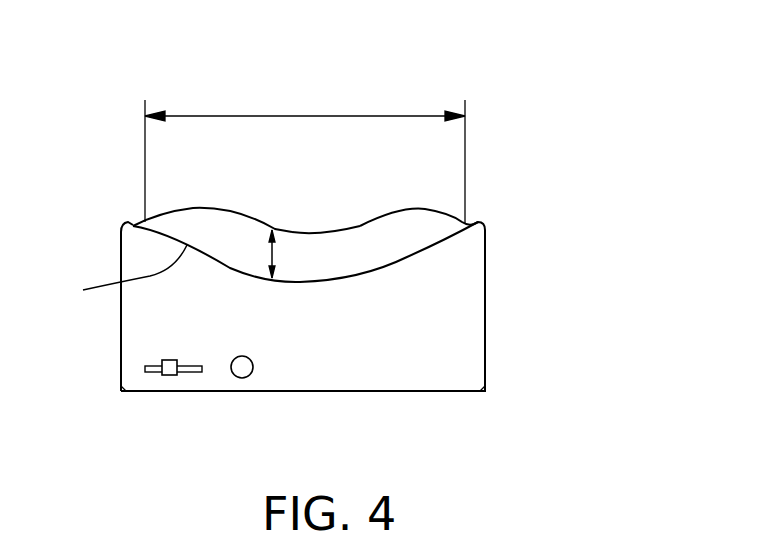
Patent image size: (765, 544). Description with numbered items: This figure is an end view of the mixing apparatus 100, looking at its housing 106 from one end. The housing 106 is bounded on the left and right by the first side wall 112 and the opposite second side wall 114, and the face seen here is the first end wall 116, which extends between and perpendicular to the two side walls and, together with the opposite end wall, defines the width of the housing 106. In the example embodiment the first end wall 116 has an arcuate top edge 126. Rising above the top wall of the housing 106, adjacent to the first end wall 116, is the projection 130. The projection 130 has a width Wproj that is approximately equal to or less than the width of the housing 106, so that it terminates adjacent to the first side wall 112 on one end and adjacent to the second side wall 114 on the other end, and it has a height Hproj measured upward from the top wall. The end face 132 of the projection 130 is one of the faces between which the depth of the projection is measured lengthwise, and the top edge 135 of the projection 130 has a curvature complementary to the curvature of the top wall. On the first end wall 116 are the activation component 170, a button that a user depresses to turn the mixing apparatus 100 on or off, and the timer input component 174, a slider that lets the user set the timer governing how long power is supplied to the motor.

The mixing apparatus 100 is at (325, 253).
The housing 106 is at (486, 272).
The first side wall 112 is at (487, 274).
The second side wall 114 is at (118, 264).
The first end wall 116 is at (337, 362).
The top edge 126 is at (404, 257).
The projection 130 is at (327, 241).
The end face 132 is at (255, 266).
The top edge 135 is at (213, 209).
The activation component 170 is at (243, 378).
The timer input component 174 is at (172, 375).
The width of the projection Wproj is at (275, 115).
The height of the projection Hproj is at (264, 213).